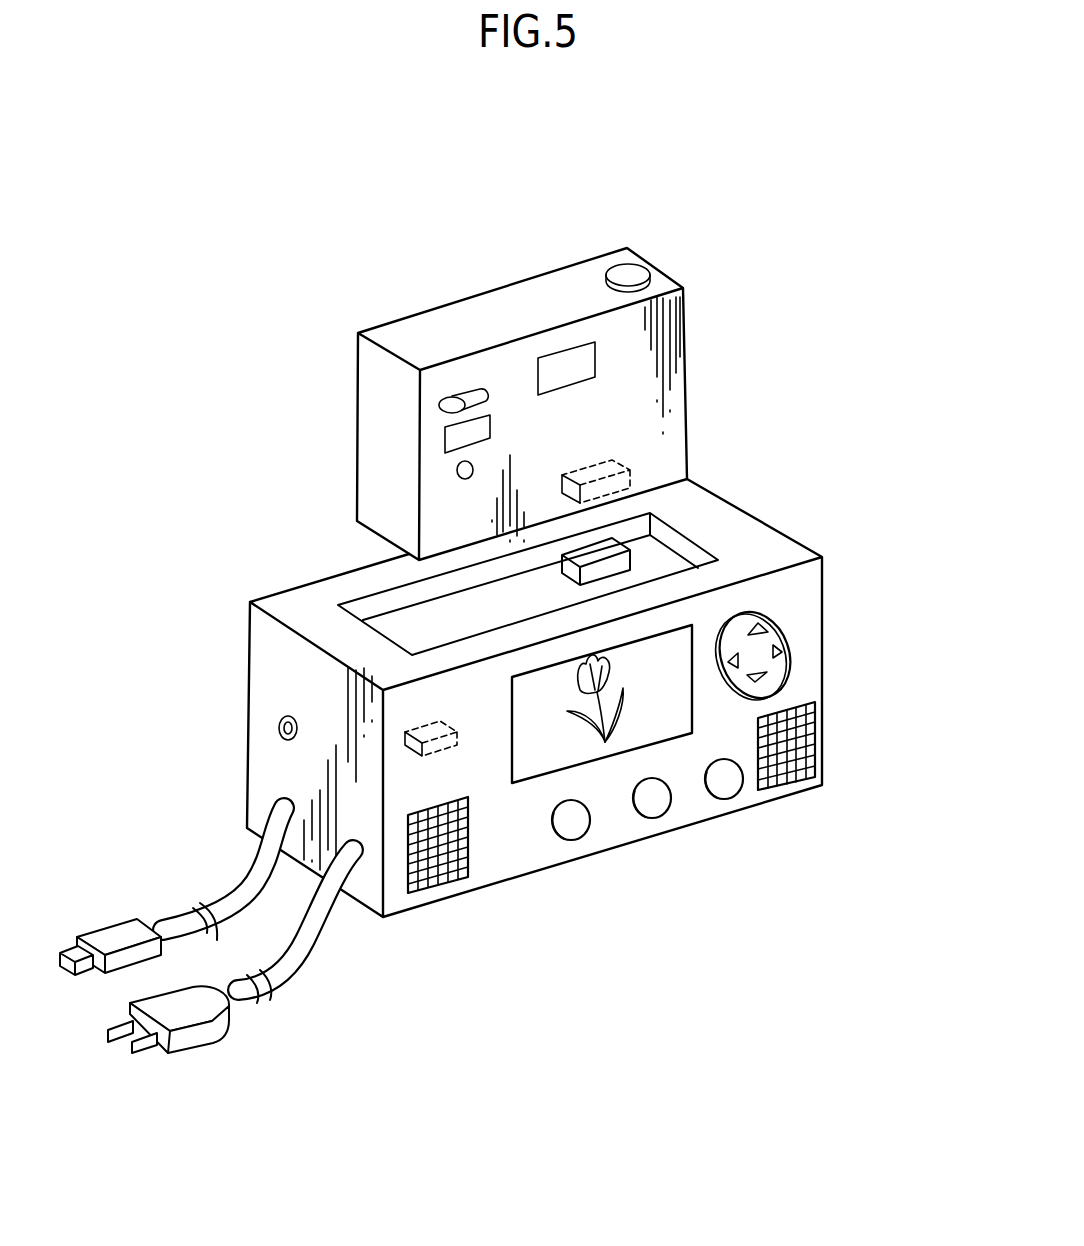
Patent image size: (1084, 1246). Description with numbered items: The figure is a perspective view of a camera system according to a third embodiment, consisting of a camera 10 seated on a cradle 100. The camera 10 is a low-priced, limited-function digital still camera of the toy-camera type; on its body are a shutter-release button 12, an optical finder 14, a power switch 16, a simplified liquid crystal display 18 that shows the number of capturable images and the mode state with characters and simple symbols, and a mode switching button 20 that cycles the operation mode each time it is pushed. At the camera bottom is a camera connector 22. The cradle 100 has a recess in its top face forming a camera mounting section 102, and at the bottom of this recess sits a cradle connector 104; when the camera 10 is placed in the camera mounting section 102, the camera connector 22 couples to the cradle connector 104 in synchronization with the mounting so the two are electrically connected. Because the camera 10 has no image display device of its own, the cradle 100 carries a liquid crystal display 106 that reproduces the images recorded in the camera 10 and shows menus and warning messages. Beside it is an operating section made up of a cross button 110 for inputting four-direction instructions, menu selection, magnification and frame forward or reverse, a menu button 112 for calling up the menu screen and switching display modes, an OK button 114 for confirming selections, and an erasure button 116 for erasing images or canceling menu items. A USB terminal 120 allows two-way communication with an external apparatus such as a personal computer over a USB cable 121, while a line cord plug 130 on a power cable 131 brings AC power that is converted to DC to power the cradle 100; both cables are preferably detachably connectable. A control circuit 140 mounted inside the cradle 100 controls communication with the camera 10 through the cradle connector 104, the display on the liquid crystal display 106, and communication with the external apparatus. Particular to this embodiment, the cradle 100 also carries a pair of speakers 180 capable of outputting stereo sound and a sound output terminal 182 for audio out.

The camera 10 is at (376, 415).
The shutter-release button 12 is at (635, 277).
The optical finder 14 is at (590, 372).
The power switch 16 is at (457, 400).
The liquid crystal display 18 is at (483, 433).
The mode switching button 20 is at (457, 470).
The camera connector 22 is at (630, 466).
The cradle 100 is at (805, 687).
The camera mounting section 102 is at (380, 599).
The cradle connector 104 is at (623, 562).
The liquid crystal display 106 is at (520, 786).
The cross button 110 is at (778, 632).
The menu button 112 is at (572, 837).
The OK button 114 is at (657, 807).
The erasure button 116 is at (732, 790).
The USB terminal 120 is at (120, 935).
The USB cable 121 is at (238, 895).
The line cord plug 130 is at (195, 1035).
The power cable 131 is at (300, 953).
The control circuit 140 is at (405, 752).
The speakers 180 is at (443, 870).
The sound output terminal 182 is at (278, 727).